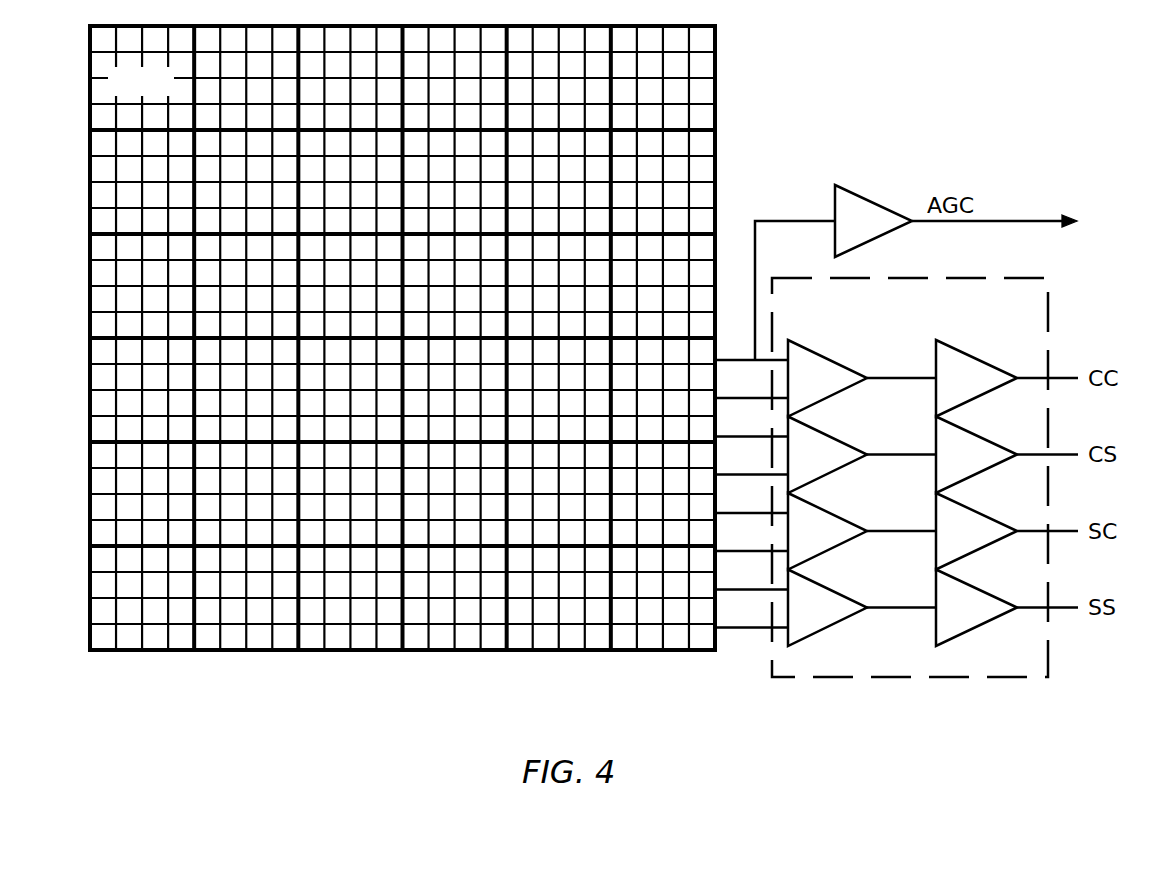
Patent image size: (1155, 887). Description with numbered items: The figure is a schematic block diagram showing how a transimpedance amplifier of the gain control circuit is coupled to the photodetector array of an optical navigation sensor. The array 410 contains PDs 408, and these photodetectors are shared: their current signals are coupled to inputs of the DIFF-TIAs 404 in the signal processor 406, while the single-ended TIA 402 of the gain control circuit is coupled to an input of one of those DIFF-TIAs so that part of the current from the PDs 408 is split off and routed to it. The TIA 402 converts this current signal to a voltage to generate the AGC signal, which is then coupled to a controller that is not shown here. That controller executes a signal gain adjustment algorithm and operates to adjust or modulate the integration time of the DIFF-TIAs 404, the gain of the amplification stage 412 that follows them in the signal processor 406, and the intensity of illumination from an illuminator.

The single-ended TIA 402 is at (863, 193).
The DIFF-TIA 404 is at (820, 320).
The signal processor 406 is at (1034, 657).
The PDs 408 is at (716, 47).
The array 410 is at (163, 92).
The amplification stage 412 is at (963, 320).